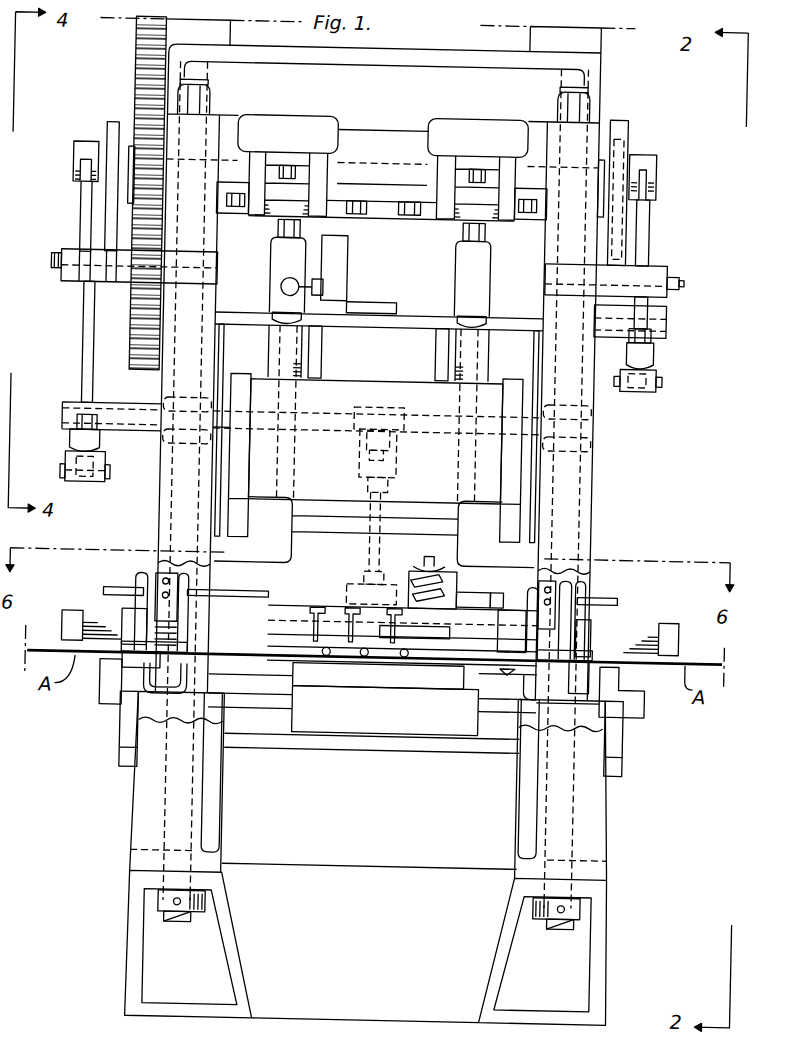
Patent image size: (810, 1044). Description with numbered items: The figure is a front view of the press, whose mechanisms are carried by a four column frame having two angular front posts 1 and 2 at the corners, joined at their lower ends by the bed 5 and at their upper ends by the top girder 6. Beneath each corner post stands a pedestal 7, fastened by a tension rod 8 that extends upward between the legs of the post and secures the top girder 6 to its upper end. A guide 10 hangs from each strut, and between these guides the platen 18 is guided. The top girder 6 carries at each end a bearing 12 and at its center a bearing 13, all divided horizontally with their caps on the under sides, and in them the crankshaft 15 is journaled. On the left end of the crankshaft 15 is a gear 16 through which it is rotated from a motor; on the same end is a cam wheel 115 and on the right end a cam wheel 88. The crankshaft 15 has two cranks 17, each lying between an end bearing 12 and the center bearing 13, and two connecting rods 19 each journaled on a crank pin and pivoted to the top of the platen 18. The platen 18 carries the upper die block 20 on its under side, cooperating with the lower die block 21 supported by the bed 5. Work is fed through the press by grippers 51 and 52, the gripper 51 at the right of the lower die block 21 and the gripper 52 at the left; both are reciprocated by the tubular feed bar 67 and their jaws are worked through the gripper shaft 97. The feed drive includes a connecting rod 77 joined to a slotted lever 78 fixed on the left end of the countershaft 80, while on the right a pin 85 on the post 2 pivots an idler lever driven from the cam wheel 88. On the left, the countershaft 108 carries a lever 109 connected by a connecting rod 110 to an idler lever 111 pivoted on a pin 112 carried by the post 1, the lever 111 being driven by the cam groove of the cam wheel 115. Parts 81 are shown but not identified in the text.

The front post 1 is at (149, 807).
The front post 2 is at (603, 815).
The bed 5 is at (461, 863).
The top girder 6 is at (462, 50).
The pedestal 7 is at (137, 936).
The tension rod 8 is at (174, 835).
The guide 10 is at (237, 523).
The end bearing 12 is at (228, 145).
The center bearing 13 is at (407, 145).
The crankshaft 15 is at (121, 150).
The gear 16 is at (133, 57).
The crank 17 is at (262, 223).
The platen 18 is at (375, 441).
The connecting rod 19 is at (380, 273).
The upper die block 20 is at (437, 506).
The lower die block 21 is at (385, 711).
The gripper 51 is at (584, 636).
The gripper 52 is at (125, 622).
The tubular feed bar 67 is at (630, 630).
The connecting rod 77 is at (292, 469).
The slotted lever 78 is at (342, 249).
The countershaft 80 is at (665, 313).
The rod 81 is at (643, 217).
The pin 85 is at (680, 274).
The cam wheel 88 is at (612, 121).
The gripper shaft 97 is at (108, 597).
The countershaft 108 is at (62, 409).
The lever 109 is at (86, 490).
The connecting rod 110 is at (79, 326).
The idler lever 111 is at (74, 202).
The pin 112 is at (46, 268).
The cam wheel 115 is at (99, 124).